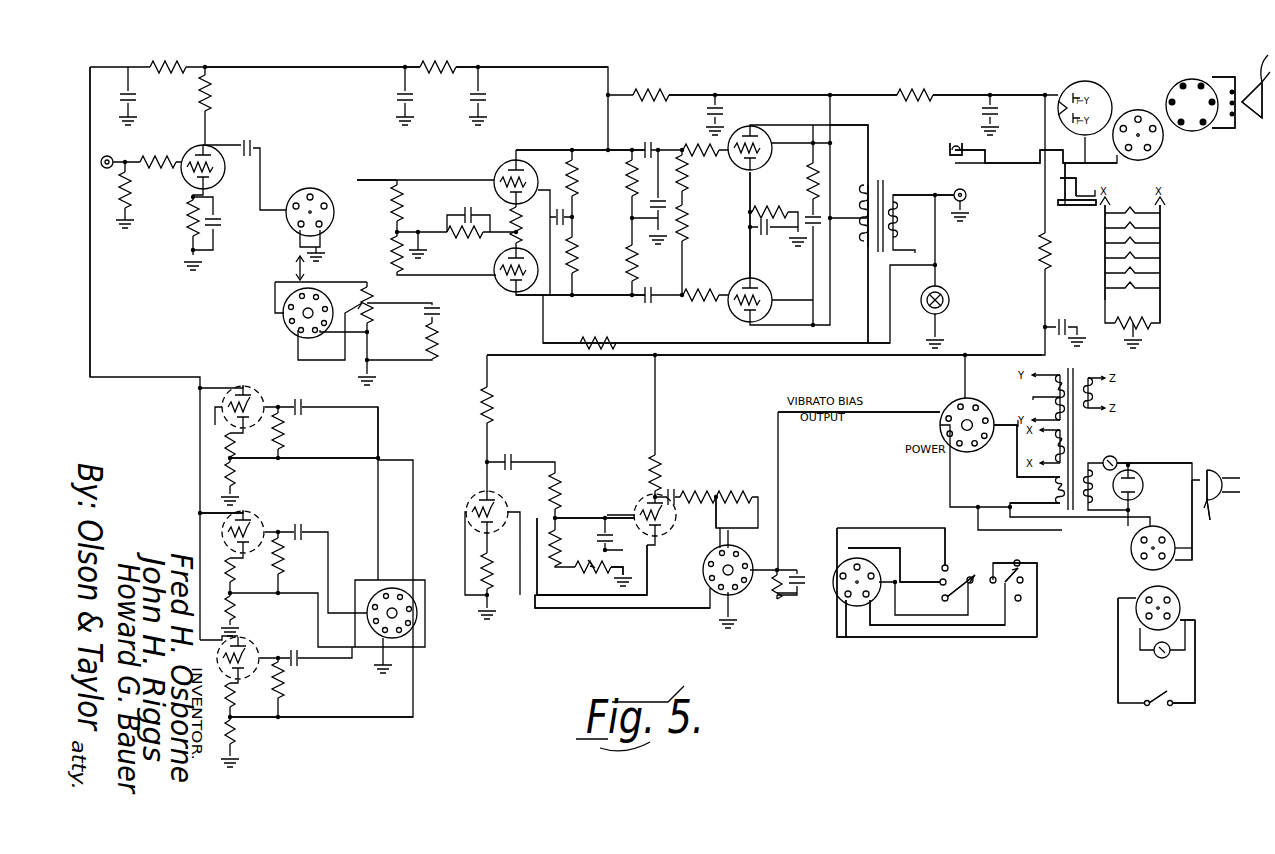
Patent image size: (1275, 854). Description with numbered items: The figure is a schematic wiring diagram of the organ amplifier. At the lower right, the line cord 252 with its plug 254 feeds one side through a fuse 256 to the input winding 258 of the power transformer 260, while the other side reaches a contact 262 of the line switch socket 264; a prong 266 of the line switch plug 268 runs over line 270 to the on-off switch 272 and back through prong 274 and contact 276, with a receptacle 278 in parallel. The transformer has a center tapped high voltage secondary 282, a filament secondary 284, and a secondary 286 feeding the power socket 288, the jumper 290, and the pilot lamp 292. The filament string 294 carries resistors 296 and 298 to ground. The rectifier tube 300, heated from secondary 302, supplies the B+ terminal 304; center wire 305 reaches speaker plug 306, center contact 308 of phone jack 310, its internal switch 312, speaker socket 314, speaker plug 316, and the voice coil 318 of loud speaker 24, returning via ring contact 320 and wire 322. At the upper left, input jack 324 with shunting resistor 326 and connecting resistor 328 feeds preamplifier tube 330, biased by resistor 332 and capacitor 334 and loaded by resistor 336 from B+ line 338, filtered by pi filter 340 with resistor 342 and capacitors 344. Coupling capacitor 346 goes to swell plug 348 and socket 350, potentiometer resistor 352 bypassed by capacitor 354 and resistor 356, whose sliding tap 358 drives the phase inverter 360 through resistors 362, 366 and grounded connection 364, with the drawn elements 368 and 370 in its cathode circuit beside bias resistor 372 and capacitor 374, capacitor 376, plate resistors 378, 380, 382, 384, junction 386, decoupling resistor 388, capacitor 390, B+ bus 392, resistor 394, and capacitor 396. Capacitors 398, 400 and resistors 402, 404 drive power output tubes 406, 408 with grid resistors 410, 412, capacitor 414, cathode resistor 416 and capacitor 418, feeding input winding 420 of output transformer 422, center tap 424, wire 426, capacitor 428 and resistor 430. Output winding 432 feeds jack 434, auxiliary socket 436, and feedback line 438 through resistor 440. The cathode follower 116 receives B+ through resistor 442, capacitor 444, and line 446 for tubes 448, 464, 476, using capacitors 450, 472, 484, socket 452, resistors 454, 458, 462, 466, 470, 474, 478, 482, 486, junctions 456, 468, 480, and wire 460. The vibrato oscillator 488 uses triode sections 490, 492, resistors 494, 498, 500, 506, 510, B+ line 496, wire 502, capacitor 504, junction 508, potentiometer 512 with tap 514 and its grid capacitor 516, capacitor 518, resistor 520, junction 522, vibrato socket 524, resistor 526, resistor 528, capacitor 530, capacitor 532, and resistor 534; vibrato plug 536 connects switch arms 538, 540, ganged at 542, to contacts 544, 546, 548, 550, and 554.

The loud speaker 24 is at (1222, 128).
The cathode follower 116 is at (392, 429).
The line cord 252 is at (1210, 470).
The plug 254 is at (1225, 522).
The fuse 256 is at (1113, 457).
The input winding 258 is at (1143, 490).
The power transformer 260 is at (1084, 444).
The contact 262 is at (1170, 562).
The line switch socket 264 is at (1195, 548).
The prong 266 is at (1180, 613).
The line switch plug 268 is at (1137, 586).
The line 270 is at (1196, 672).
The switch 272 is at (1162, 713).
The prong 274 is at (1137, 612).
The contact 276 is at (1135, 540).
The receptacle 278 is at (1165, 463).
The high voltage secondary winding 282 is at (1068, 368).
The 6.3 volt secondary winding 284 is at (1016, 470).
The 12.6 volt secondary winding 286 is at (1060, 490).
The power socket 288 is at (940, 425).
The jumper 290 is at (990, 410).
The pilot lamp 292 is at (1172, 650).
The filament string 294 is at (1173, 241).
The resistor 296 is at (1103, 314).
The resistor 298 is at (1162, 300).
The rectifier tube 300 is at (1095, 82).
The five volt secondary winding 302 is at (1100, 393).
The B+ terminal 304 is at (1044, 93).
The center wire 305 is at (1016, 150).
The speaker plug 306 is at (952, 145).
The center contact 308 is at (1063, 185).
The phone jack 310 is at (1080, 212).
The internal switch 312 is at (1096, 192).
The speaker socket 314 is at (1138, 110).
The speaker plug 316 is at (1195, 131).
The voice coil 318 is at (1265, 72).
The ring contact 320 is at (1058, 204).
The wire 322 is at (1058, 178).
The input jack 324 is at (111, 149).
The shunting resistor 326 is at (120, 200).
The connecting resistor 328 is at (157, 158).
The preamplifier tube 330 is at (215, 145).
The resistor 332 is at (185, 215).
The capacitor 334 is at (222, 230).
The load resistor 336 is at (208, 100).
The B+ line 338 is at (308, 66).
The pi filter 340 is at (477, 61).
The resistor 342 is at (440, 60).
The shunting capacitors 344 is at (393, 106).
The coupling capacitor 346 is at (252, 142).
The swell plug 348 is at (320, 188).
The swell socket 350 is at (282, 328).
The potentiometer resistor 352 is at (377, 293).
The capacitor 354 is at (444, 314).
The resistor 356 is at (440, 335).
The sliding tap 358 is at (364, 296).
The phase inverter 360 is at (530, 226).
The resistor 362 is at (400, 200).
The connection 364 is at (396, 206).
The resistor 366 is at (396, 255).
The tube 368 is at (495, 182).
The resistor 370 is at (465, 236).
The resistor 372 is at (422, 248).
The capacitor 374 is at (466, 205).
The .047 mfd. capacitor 376 is at (568, 190).
The resistor 378 is at (595, 150).
The resistor 380 is at (576, 252).
The resistor 382 is at (633, 160).
The resistor 384 is at (628, 275).
The junction 386 is at (637, 252).
The decoupling resistor 388 is at (651, 90).
The shunting capacitor 390 is at (724, 111).
The B+ bus 392 is at (800, 93).
The decoupling resistor 394 is at (915, 90).
The shunting capacitor 396 is at (980, 113).
The capacitor 398 is at (650, 140).
The capacitor 400 is at (649, 305).
The resistor 402 is at (686, 160).
The resistor 404 is at (700, 289).
The power output tube 406 is at (769, 223).
The power output tube 408 is at (775, 270).
The grid resistor 410 is at (686, 182).
The grid resistor 412 is at (685, 220).
The capacitor 414 is at (584, 220).
The resistor 416 is at (748, 212).
The shunting capacitor 418 is at (764, 235).
The input winding 420 is at (878, 250).
The output transformer 422 is at (881, 174).
The center tap 424 is at (863, 200).
The wire 426 is at (848, 145).
The capacitor 428 is at (810, 228).
The resistor 430 is at (812, 165).
The output winding 432 is at (905, 195).
The jack 434 is at (966, 205).
The auxiliary speaker socket 436 is at (950, 297).
The negative feedback line 438 is at (865, 345).
The resistor 440 is at (596, 337).
The resistor 442 is at (168, 60).
The shunting capacitor 444 is at (136, 97).
The line 446 is at (92, 293).
The tube 448 is at (236, 380).
The capacitor 450 is at (303, 400).
The socket 452 is at (394, 588).
The resistor 454 is at (215, 425).
The junction 456 is at (226, 446).
The resistor 458 is at (226, 474).
The wire 460 is at (320, 456).
The resistor 462 is at (284, 432).
The triode tube 464 is at (250, 512).
The resistor 466 is at (200, 513).
The junction 468 is at (235, 568).
The resistor 470 is at (236, 606).
The capacitor 472 is at (305, 520).
The resistor 474 is at (283, 568).
The tube 476 is at (246, 640).
The resistor 478 is at (235, 690).
The junction 480 is at (236, 719).
The resistor 482 is at (236, 735).
The capacitor 484 is at (297, 670).
The resistor 486 is at (284, 690).
The vibrato oscillator 488 is at (679, 632).
The triode tube section 490 is at (470, 495).
The triode tube section 492 is at (660, 540).
The load resistor 494 is at (494, 403).
The B+ line 496 is at (704, 357).
The resistor 498 is at (672, 460).
The resistor 500 is at (495, 580).
The wire 502 is at (570, 600).
The capacitor 504 is at (513, 455).
The resistor 506 is at (560, 483).
The junction 508 is at (556, 517).
The resistor 510 is at (590, 518).
The potentiometer resistor 512 is at (583, 585).
The sliding tap 514 is at (574, 548).
The capacitor 516 is at (625, 544).
The capacitor 518 is at (674, 486).
The resistor 520 is at (695, 490).
The junction 522 is at (714, 510).
The vibrato socket 524 is at (704, 575).
The resistor 526 is at (740, 492).
The resistor 528 is at (778, 600).
The capacitor 530 is at (805, 560).
The shunting capacitor 532 is at (1044, 325).
The resistor 534 is at (1040, 252).
The vibrato plug 536 is at (838, 600).
The switch arm 538 is at (960, 637).
The switch arm 540 is at (1015, 600).
The gang 542 is at (990, 572).
The off contact 544 is at (908, 628).
The medium contact 546 is at (930, 575).
The full contact 548 is at (949, 541).
The off contact 550 is at (1022, 560).
The fixed contact 554 is at (1022, 600).